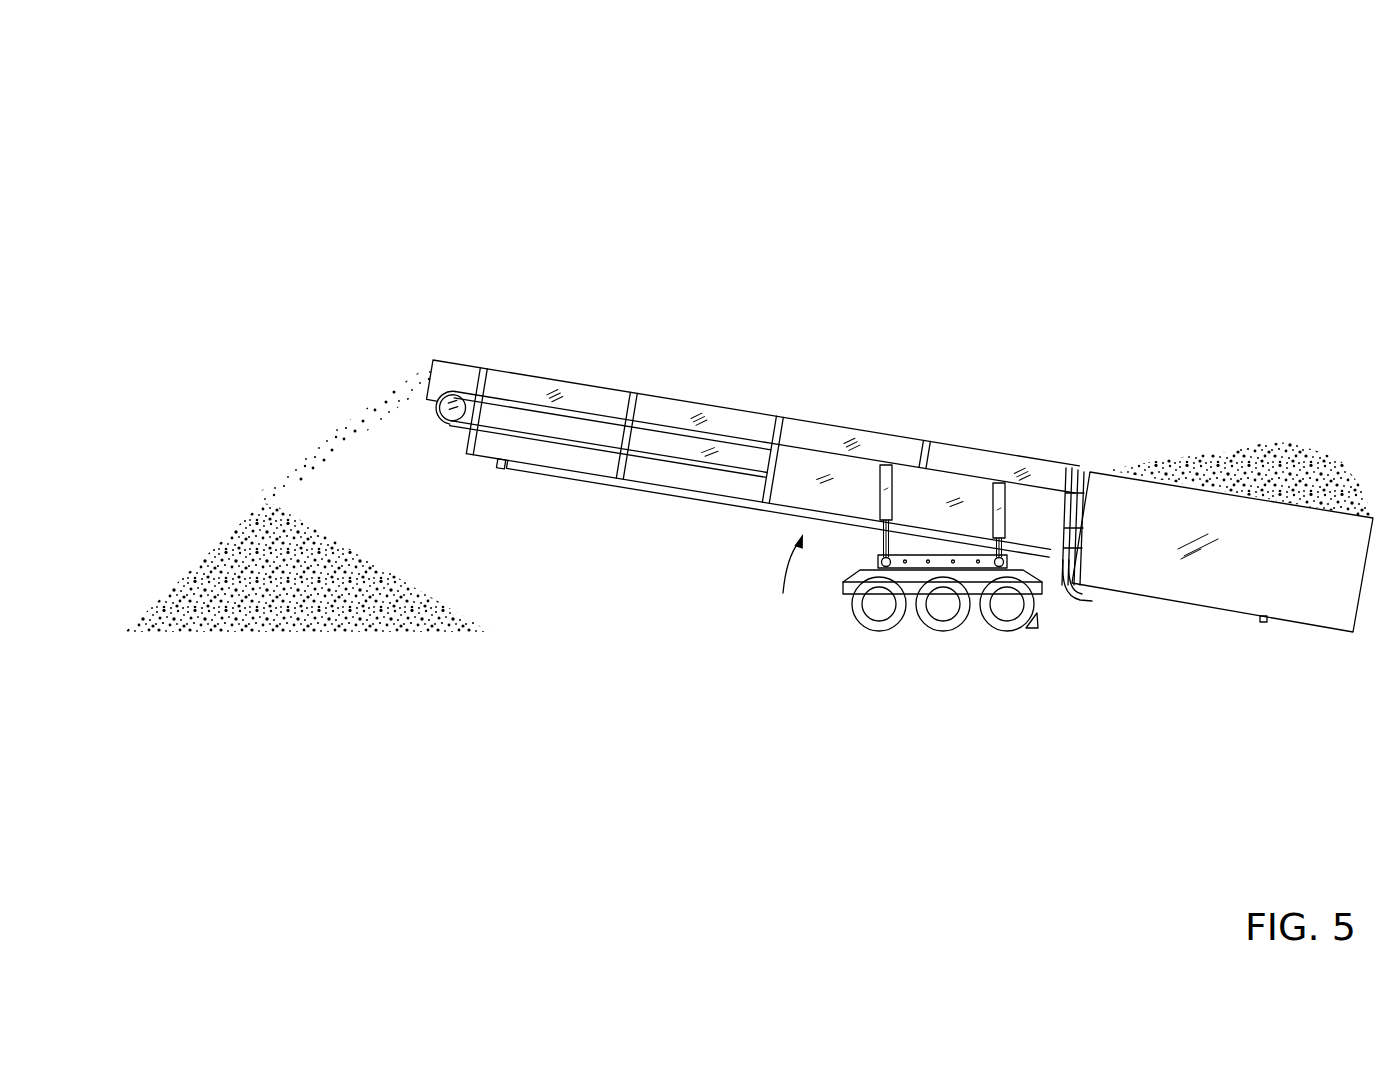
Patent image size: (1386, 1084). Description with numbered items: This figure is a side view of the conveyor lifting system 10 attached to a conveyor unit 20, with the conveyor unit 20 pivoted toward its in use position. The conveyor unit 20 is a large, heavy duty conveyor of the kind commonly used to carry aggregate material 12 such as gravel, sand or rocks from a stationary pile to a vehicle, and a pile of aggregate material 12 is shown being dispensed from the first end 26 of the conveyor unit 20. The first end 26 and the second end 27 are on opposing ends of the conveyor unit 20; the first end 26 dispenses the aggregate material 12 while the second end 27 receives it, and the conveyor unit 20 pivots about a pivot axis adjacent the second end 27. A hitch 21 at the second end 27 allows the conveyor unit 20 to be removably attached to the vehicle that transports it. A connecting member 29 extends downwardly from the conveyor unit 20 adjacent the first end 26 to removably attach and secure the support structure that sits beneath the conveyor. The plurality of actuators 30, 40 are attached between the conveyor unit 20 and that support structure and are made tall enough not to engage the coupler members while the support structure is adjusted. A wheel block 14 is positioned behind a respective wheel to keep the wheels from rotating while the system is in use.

The conveyor lifting system 10 is at (222, 134).
The aggregate material 12 is at (262, 510).
The wheel block 14 is at (1036, 621).
The conveyor unit 20 is at (664, 388).
The hitch 21 is at (1268, 623).
The first end 26 is at (466, 458).
The second end 27 is at (1092, 601).
The connecting member 29 is at (509, 477).
The actuator 30 is at (860, 470).
The actuator 40 is at (973, 489).